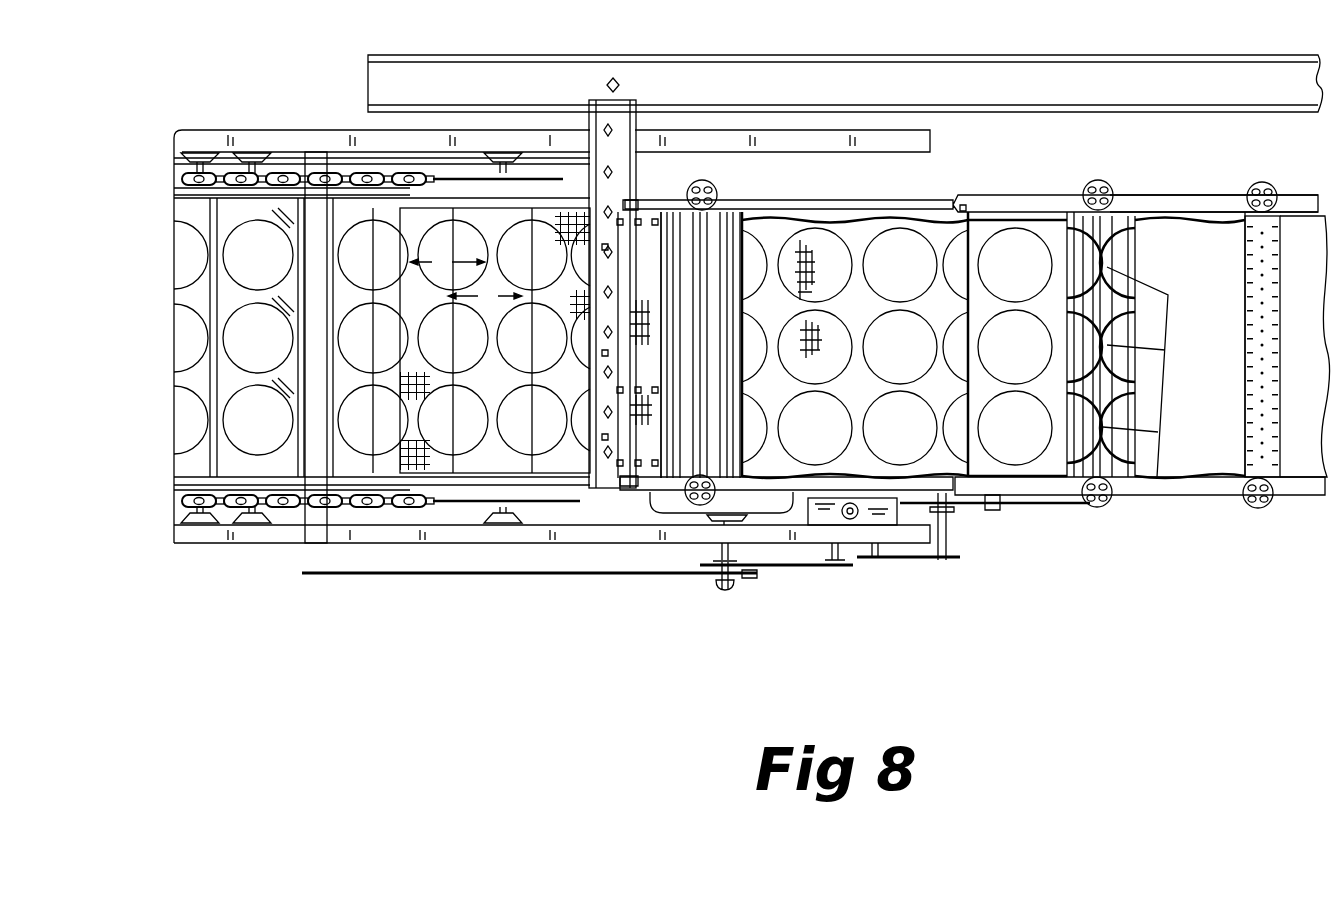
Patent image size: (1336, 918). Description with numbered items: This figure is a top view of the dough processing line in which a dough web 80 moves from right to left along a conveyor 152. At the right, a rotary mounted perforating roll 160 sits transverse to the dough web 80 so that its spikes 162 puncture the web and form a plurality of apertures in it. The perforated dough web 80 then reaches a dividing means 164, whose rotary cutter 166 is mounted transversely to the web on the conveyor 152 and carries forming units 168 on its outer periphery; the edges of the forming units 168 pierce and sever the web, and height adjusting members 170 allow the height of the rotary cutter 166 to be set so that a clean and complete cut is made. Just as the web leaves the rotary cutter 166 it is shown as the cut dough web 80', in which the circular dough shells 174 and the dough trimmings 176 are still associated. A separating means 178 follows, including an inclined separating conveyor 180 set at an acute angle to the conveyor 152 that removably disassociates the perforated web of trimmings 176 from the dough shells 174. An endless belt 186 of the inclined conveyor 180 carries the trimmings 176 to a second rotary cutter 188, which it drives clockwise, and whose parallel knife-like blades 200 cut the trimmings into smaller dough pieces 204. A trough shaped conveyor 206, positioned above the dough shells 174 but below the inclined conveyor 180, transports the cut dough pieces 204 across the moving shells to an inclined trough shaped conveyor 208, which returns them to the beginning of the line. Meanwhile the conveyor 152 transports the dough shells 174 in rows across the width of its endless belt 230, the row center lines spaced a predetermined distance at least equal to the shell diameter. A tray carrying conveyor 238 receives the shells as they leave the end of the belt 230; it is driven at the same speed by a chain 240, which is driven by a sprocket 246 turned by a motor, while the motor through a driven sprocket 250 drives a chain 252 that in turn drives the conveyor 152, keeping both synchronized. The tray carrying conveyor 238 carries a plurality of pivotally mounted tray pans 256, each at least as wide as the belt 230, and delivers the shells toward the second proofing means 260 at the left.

The inclined trough shaped conveyor 208 is at (540, 54).
The tray pans 256 is at (345, 222).
The second rotary cutter 188 is at (673, 212).
The endless belt 186 is at (800, 218).
The separating means 178 is at (960, 195).
The cut dough web 80' is at (1021, 314).
The rotary cutter 166 is at (1078, 222).
The height adjusting members 170 is at (1098, 180).
The dividing means 164 is at (1130, 195).
The perforating roll 160 is at (1275, 218).
The spikes 162 is at (1232, 243).
The dough shells 174 is at (520, 458).
The dough web 80 is at (1190, 345).
The smaller dough pieces 204 is at (608, 249).
The trough shaped conveyor 206 is at (608, 482).
The dough trimmings 176 is at (848, 462).
The forming units 168 is at (1162, 320).
The conveyor 152 is at (1228, 497).
The inclined separating conveyor 180 is at (945, 525).
The second proofing means 260 is at (262, 565).
The tray carrying conveyor 238 is at (285, 506).
The endless belt 230 is at (565, 455).
The chain 240 is at (595, 576).
The knife-like blades 200 is at (685, 487).
The driven sprocket 250 is at (715, 577).
The sprocket 246 is at (748, 582).
The chain 252 is at (820, 570).